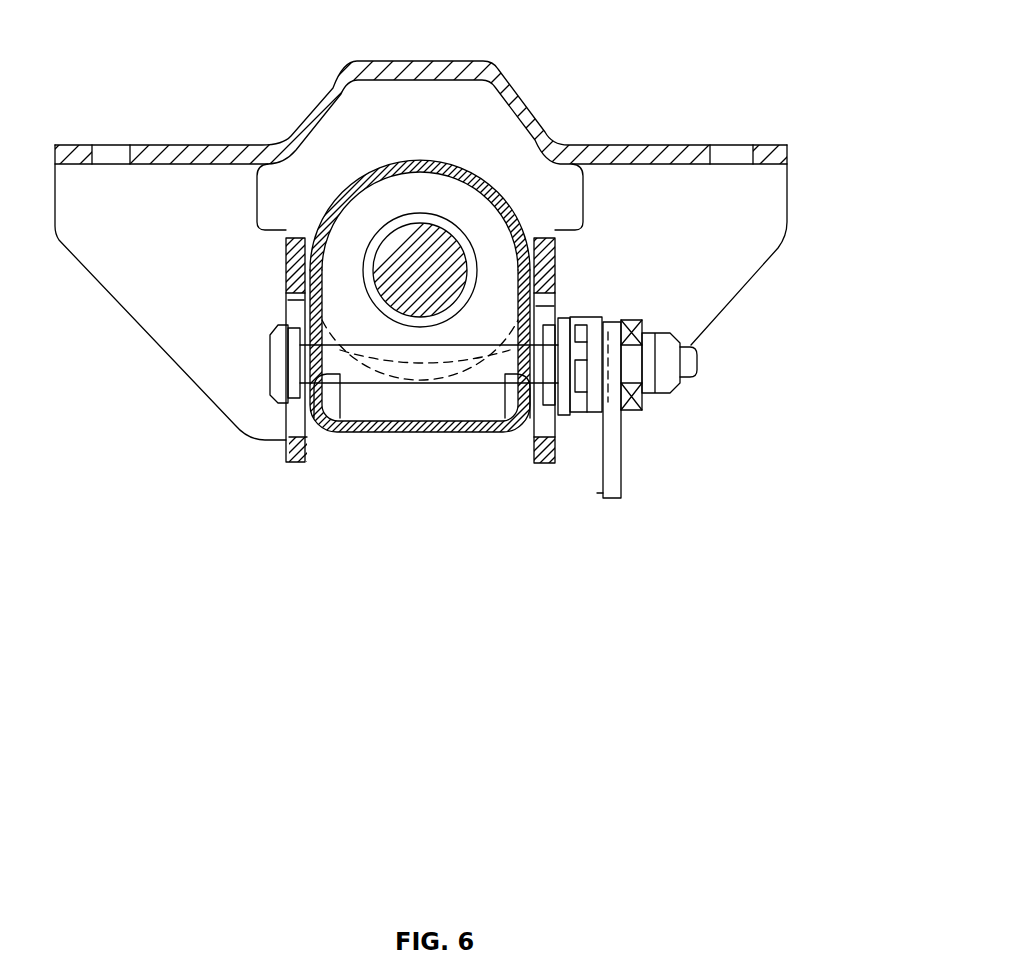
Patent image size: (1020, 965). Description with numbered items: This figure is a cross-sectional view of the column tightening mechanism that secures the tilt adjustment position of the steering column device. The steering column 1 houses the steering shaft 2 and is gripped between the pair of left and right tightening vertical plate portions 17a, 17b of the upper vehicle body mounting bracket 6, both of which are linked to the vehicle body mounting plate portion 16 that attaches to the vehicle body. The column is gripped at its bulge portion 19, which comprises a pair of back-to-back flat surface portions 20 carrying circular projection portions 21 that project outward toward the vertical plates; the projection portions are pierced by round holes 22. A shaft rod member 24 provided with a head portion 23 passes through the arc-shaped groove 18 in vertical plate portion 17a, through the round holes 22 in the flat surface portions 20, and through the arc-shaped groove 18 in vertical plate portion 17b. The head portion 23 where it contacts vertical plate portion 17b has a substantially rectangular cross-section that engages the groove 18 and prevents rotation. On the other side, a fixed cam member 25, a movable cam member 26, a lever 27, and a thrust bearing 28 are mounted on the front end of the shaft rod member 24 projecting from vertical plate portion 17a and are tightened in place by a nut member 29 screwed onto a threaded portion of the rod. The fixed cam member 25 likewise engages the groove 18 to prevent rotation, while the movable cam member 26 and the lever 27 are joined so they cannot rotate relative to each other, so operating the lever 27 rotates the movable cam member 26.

The steering column 1 is at (353, 183).
The steering shaft 2 is at (433, 213).
The upper vehicle body mounting bracket 6 is at (542, 93).
The vehicle body mounting plate portion 16 is at (690, 145).
The tightening vertical plate portion 17a is at (545, 464).
The tightening vertical plate portion 17b is at (296, 465).
The arc-shaped groove 18 is at (287, 301).
The bulge portion 19 is at (420, 433).
The flat surface portion 20 is at (298, 305).
The circular projection portion 21 is at (289, 408).
The round hole 22 is at (346, 412).
The head portion 23 is at (270, 367).
The shaft rod member 24 is at (378, 433).
The fixed cam member 25 is at (567, 416).
The movable cam member 26 is at (590, 413).
The lever 27 is at (622, 473).
The thrust bearing 28 is at (634, 409).
The nut member 29 is at (668, 393).